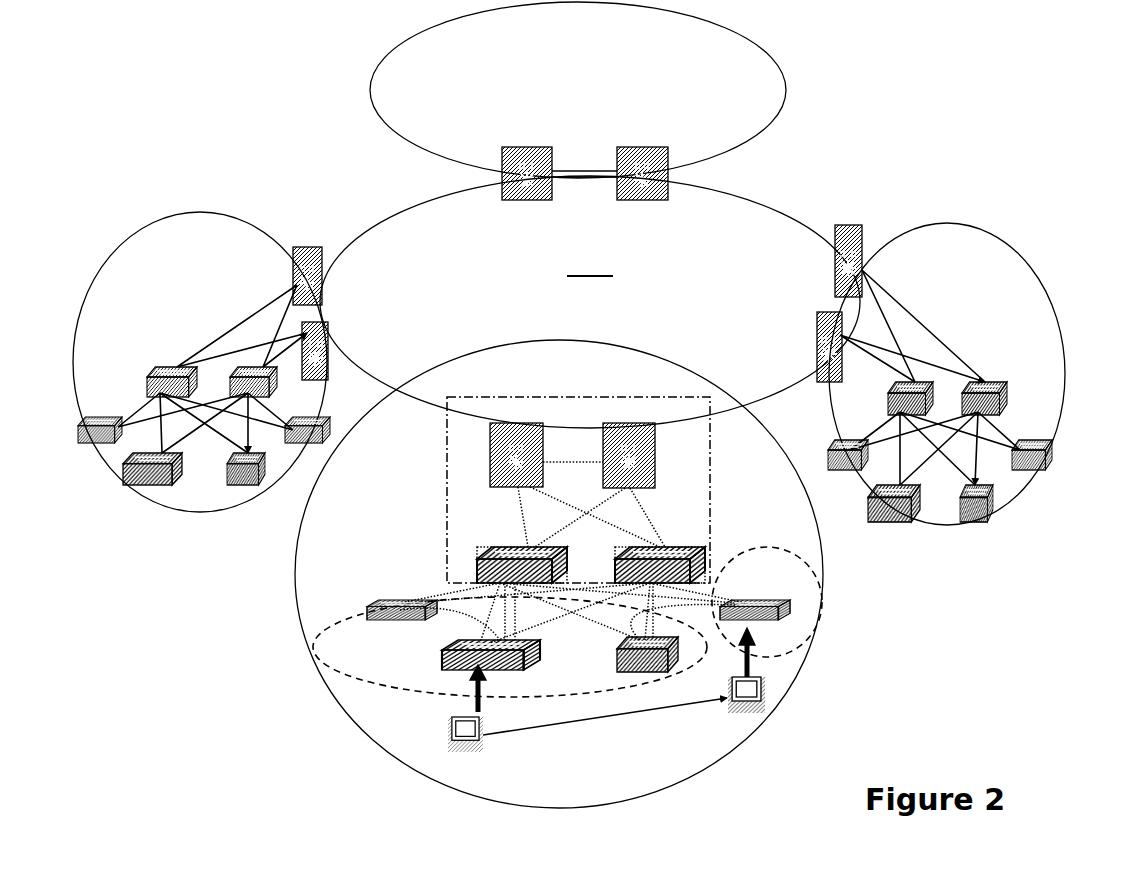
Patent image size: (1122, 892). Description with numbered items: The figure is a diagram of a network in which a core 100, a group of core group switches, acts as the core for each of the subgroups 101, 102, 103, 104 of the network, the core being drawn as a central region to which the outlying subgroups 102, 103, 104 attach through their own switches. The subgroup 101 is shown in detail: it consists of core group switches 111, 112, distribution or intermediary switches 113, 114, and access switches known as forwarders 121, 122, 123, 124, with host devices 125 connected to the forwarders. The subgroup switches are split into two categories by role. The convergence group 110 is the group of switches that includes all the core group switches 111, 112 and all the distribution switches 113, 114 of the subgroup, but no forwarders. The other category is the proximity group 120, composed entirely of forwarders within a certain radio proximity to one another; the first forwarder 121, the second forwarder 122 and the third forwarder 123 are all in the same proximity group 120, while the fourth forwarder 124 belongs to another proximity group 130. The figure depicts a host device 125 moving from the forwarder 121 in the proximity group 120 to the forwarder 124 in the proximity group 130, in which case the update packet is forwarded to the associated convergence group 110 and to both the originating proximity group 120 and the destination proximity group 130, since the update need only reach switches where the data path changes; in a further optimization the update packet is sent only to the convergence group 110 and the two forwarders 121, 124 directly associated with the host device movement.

The core 100 is at (577, 302).
The subgroup 101 is at (315, 565).
The subgroup 102 is at (110, 283).
The subgroup 103 is at (708, 58).
The subgroup 104 is at (990, 265).
The convergence group 110 is at (578, 417).
The core group switch 111 is at (503, 427).
The core group switch 112 is at (657, 462).
The distribution or intermediary switch 113 is at (503, 555).
The distribution or intermediary switch 114 is at (700, 553).
The proximity group 120 is at (335, 642).
The forwarder F1 121 is at (440, 660).
The forwarder F2 122 is at (635, 658).
The forwarder F3 123 is at (392, 602).
The forwarder F4 124 is at (780, 625).
The host device 125 is at (467, 735).
The proximity group 130 is at (780, 565).